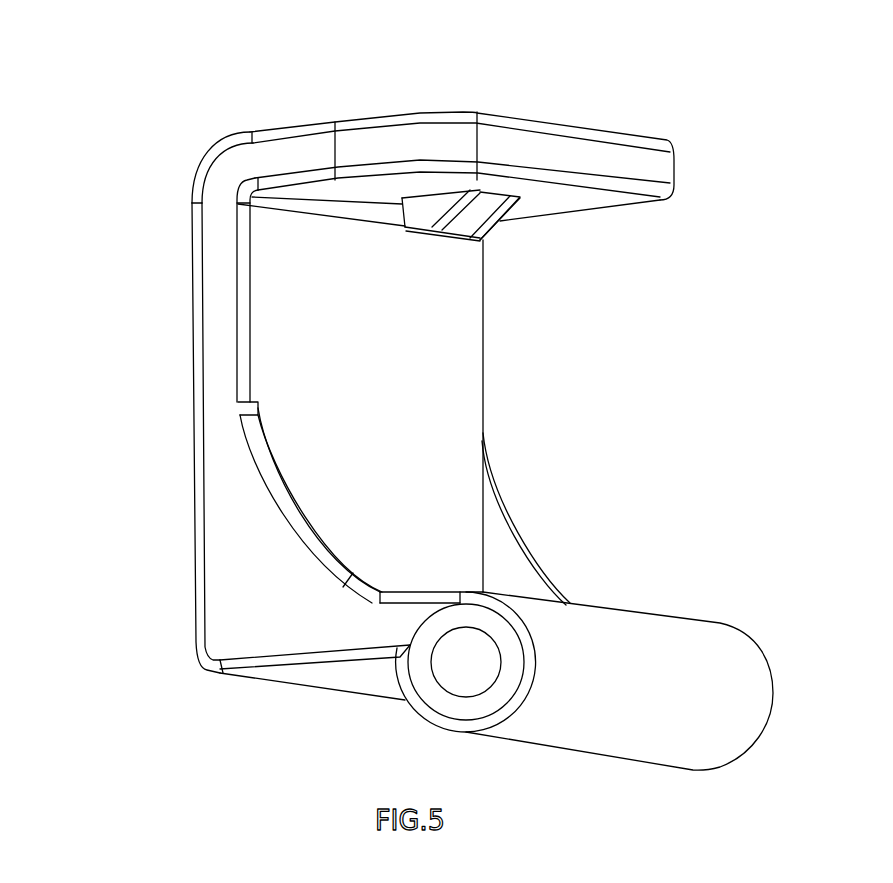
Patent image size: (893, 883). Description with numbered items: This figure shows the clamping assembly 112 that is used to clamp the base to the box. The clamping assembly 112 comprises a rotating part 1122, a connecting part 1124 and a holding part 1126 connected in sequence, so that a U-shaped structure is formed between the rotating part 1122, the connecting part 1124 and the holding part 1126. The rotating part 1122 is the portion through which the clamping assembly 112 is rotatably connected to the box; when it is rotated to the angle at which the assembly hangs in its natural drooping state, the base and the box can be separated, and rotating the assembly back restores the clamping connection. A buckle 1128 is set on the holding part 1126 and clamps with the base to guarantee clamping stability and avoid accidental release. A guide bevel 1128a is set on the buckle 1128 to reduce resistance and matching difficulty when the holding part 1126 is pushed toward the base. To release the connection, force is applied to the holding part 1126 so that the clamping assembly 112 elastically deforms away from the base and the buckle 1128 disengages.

The clamping assembly 112 is at (250, 163).
The rotating part 1122 is at (563, 640).
The connecting part 1124 is at (227, 387).
The holding part 1126 is at (367, 143).
The buckle 1128 is at (483, 232).
The guide bevel 1128a is at (428, 210).